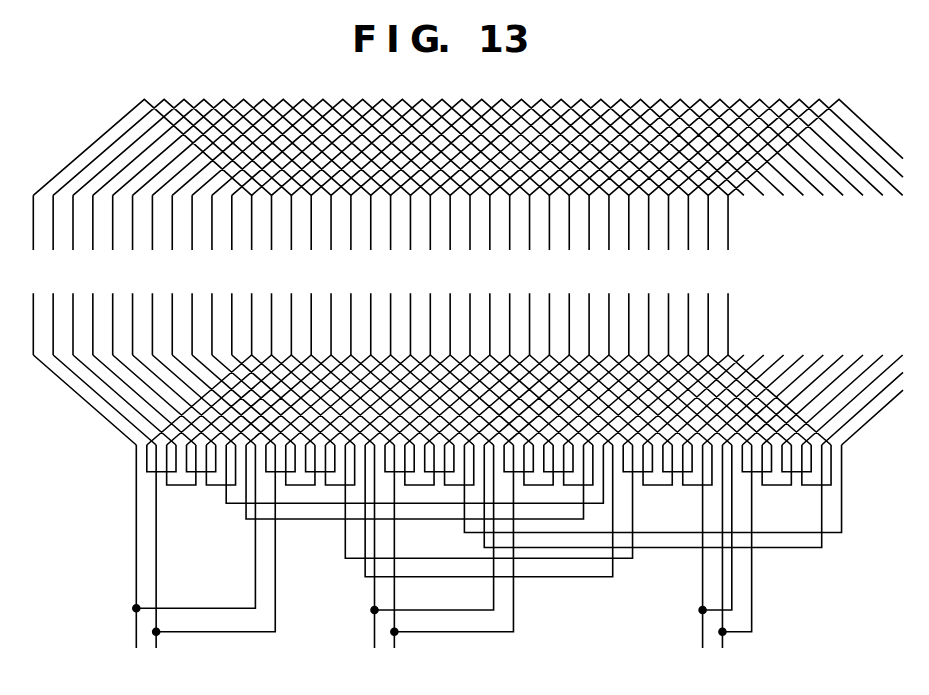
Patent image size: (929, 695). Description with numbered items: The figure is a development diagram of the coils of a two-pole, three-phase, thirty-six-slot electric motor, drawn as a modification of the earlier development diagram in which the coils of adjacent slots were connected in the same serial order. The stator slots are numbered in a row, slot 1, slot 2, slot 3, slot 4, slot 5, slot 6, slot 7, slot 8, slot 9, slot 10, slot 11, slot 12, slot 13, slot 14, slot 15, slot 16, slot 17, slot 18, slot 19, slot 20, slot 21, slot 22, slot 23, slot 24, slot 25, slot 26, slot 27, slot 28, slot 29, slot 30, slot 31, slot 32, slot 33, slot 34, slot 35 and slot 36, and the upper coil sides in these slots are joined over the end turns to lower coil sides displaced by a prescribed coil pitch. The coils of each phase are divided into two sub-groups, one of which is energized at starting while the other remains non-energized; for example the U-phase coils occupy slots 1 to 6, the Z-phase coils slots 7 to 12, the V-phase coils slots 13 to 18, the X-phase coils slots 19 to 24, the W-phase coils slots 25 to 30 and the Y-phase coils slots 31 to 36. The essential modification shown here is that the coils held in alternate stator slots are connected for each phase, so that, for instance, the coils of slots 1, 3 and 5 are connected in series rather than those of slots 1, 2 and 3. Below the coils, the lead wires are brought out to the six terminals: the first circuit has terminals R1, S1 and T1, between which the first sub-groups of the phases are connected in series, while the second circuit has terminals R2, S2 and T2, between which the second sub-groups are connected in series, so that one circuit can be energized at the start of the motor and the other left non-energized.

The stator slot 1 is at (33, 275).
The stator slot 2 is at (53, 275).
The stator slot 3 is at (73, 275).
The stator slot 4 is at (92, 275).
The stator slot 5 is at (112, 275).
The stator slot 6 is at (132, 275).
The stator slot 7 is at (152, 275).
The stator slot 8 is at (172, 275).
The stator slot 9 is at (192, 275).
The stator slot 10 is at (211, 275).
The stator slot 11 is at (231, 275).
The stator slot 12 is at (251, 275).
The stator slot 13 is at (271, 275).
The stator slot 14 is at (291, 275).
The stator slot 15 is at (310, 275).
The stator slot 16 is at (330, 275).
The stator slot 17 is at (350, 275).
The stator slot 18 is at (370, 275).
The stator slot 19 is at (390, 275).
The stator slot 20 is at (410, 275).
The stator slot 21 is at (430, 275).
The stator slot 22 is at (449, 275).
The stator slot 23 is at (469, 275).
The stator slot 24 is at (489, 275).
The stator slot 25 is at (509, 275).
The stator slot 26 is at (529, 275).
The stator slot 27 is at (549, 275).
The stator slot 28 is at (569, 275).
The stator slot 29 is at (588, 275).
The stator slot 30 is at (608, 275).
The stator slot 31 is at (628, 275).
The stator slot 32 is at (648, 275).
The stator slot 33 is at (668, 275).
The stator slot 34 is at (688, 275).
The stator slot 35 is at (707, 275).
The stator slot 36 is at (727, 275).
The first circuit terminal R1 is at (187, 561).
The second circuit terminal R2 is at (214, 561).
The first circuit terminal S1 is at (424, 561).
The second circuit terminal S2 is at (450, 561).
The first circuit terminal T1 is at (733, 561).
The second circuit terminal T2 is at (708, 561).